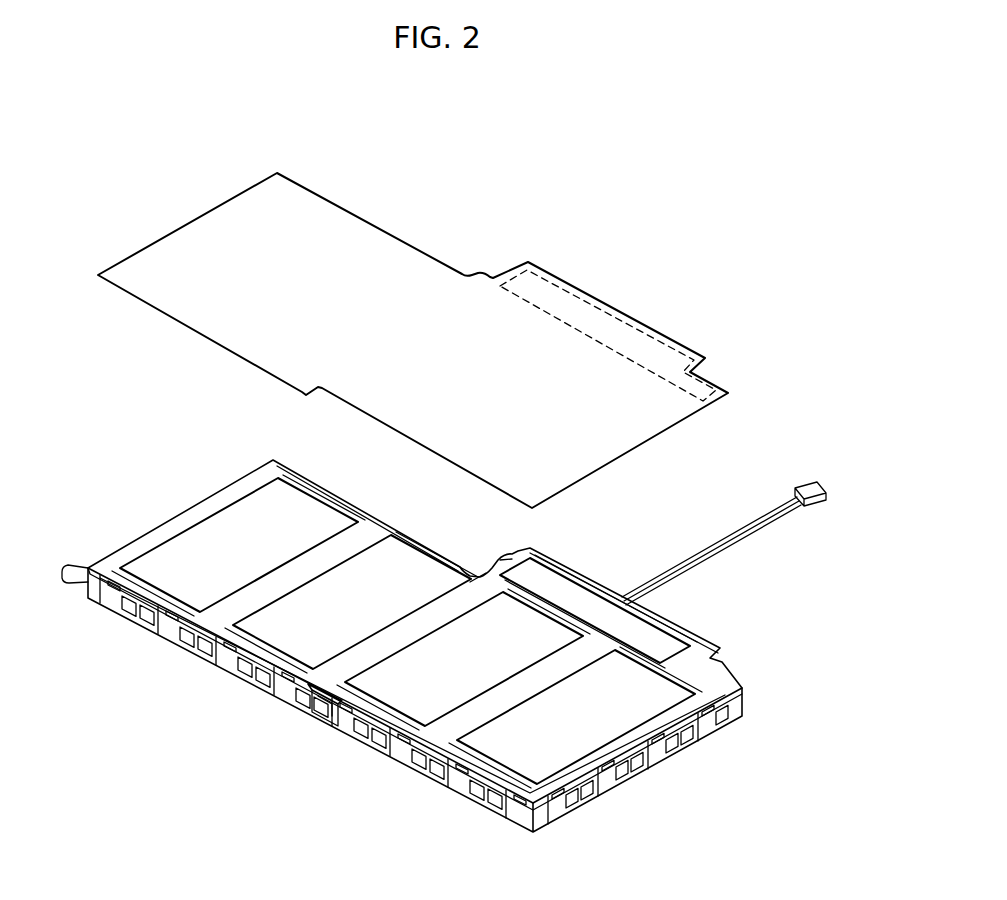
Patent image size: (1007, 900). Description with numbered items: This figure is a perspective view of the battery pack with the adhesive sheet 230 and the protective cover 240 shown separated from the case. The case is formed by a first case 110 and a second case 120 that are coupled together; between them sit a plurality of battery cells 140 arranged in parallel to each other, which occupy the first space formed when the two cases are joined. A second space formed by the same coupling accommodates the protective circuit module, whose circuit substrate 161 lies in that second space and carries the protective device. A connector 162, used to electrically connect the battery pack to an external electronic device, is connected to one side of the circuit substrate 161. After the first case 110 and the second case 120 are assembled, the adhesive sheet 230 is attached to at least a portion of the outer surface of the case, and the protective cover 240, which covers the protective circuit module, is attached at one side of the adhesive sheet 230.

The first case 110 is at (720, 724).
The second case 120 is at (745, 690).
The battery cells 140 is at (253, 512).
The circuit substrate 161 is at (563, 592).
The connector 162 is at (805, 486).
The adhesive sheet 230 is at (373, 236).
The protective cover 240 is at (612, 327).